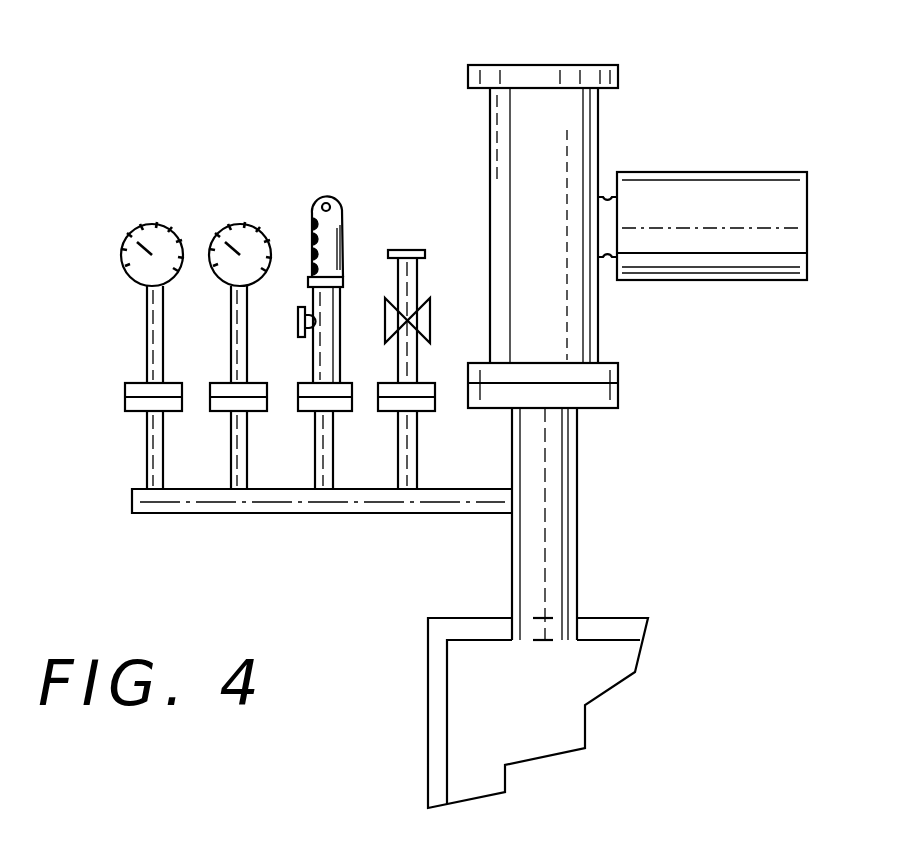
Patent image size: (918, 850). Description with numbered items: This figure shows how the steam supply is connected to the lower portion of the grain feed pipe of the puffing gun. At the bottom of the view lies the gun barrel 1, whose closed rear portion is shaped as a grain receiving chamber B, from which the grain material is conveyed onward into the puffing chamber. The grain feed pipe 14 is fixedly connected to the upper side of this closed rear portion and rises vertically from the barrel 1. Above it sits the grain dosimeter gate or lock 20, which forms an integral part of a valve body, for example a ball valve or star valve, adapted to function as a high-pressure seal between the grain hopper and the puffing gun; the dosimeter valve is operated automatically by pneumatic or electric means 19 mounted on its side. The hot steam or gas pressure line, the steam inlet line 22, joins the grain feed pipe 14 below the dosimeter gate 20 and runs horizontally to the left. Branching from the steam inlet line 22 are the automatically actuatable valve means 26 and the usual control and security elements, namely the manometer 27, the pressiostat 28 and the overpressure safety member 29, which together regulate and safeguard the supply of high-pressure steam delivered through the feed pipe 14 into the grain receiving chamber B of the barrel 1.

The barrel 1 is at (430, 683).
The grain feed pipe 14 is at (538, 488).
The pneumatic or electric means 19 is at (713, 242).
The grain dosimeter gate or lock 20 is at (598, 138).
The steam inlet line 22 is at (450, 498).
The automatically actuatable valve means 26 is at (428, 318).
The manometer 27 is at (138, 227).
The pressiostat 28 is at (240, 225).
The overpressure safety member 29 is at (322, 196).
The grain receiving chamber B is at (545, 712).